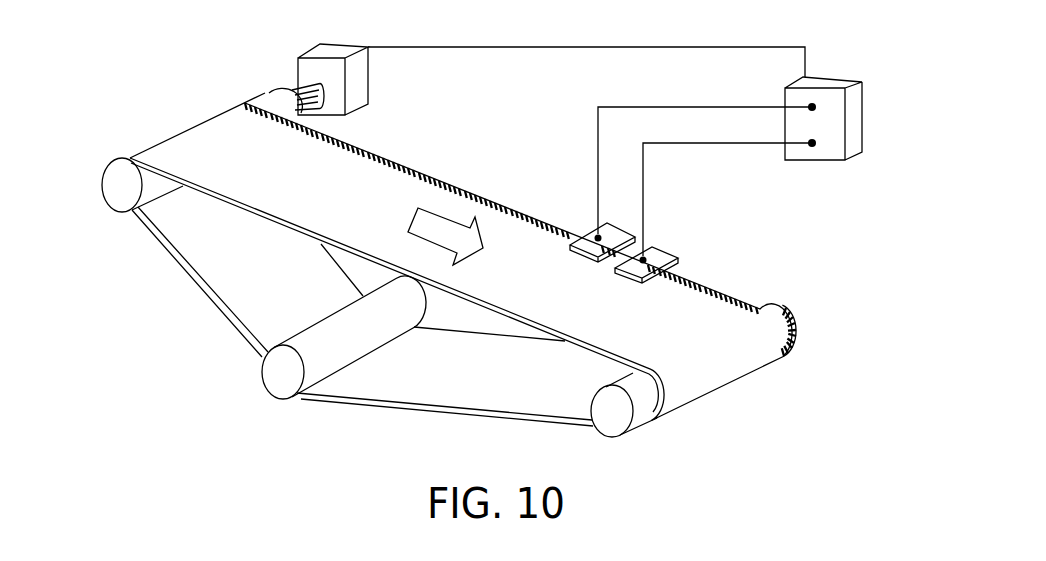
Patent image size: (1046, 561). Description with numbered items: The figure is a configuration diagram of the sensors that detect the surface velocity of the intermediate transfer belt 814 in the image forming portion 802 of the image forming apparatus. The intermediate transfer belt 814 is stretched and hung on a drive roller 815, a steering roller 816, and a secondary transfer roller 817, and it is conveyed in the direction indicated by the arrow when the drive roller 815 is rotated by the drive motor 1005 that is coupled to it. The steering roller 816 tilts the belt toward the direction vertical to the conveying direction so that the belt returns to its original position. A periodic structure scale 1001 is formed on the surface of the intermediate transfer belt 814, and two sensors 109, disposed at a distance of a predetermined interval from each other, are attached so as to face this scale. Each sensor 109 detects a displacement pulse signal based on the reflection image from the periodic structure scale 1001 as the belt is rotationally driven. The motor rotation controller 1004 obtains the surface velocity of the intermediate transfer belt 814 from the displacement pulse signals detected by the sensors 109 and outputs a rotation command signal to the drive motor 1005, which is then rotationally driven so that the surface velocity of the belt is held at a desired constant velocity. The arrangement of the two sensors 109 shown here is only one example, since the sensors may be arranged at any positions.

The drive motor 1005 is at (307, 70).
The motor rotation controller 1004 is at (818, 148).
The sensor 109 is at (583, 220).
The periodic structure scale 1001 is at (348, 135).
The image forming portion 802 is at (467, 323).
The intermediate transfer belt 814 is at (460, 387).
The drive roller 815 is at (120, 195).
The steering roller 816 is at (610, 418).
The secondary transfer roller 817 is at (282, 372).